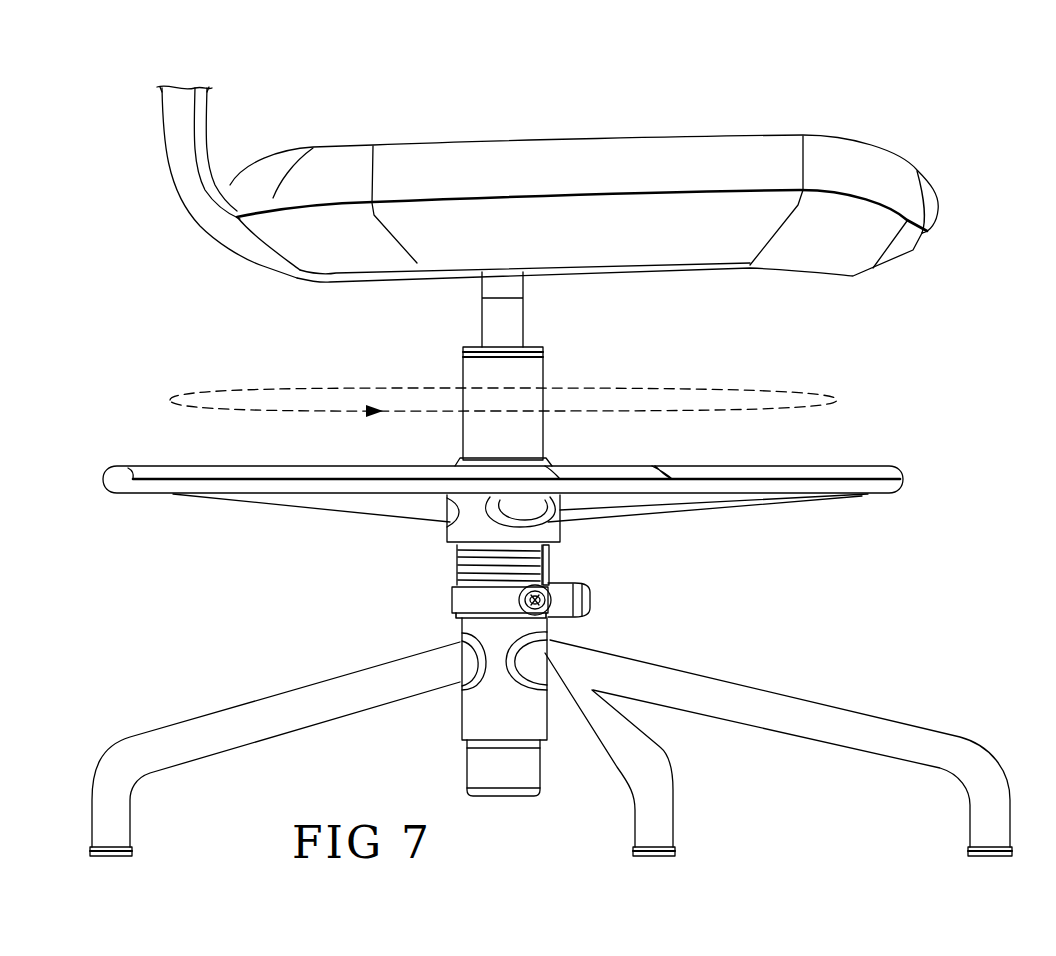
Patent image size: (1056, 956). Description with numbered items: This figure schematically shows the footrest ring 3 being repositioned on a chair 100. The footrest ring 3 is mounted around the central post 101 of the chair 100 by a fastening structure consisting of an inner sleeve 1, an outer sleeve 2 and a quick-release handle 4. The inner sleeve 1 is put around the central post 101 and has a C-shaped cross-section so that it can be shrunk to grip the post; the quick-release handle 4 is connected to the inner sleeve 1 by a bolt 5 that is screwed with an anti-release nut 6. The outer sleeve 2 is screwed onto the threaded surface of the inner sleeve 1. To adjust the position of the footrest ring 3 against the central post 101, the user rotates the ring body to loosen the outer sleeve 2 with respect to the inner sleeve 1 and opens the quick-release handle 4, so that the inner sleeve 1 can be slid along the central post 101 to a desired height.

The chair 100 is at (178, 223).
The central post 101 is at (523, 418).
The footrest ring 3 is at (100, 458).
The outer sleeve 2 is at (438, 532).
The inner sleeve 1 is at (438, 601).
The quick-release handle 4 is at (588, 592).
The bolt 5 is at (590, 604).
The anti-release nut 6 is at (548, 615).